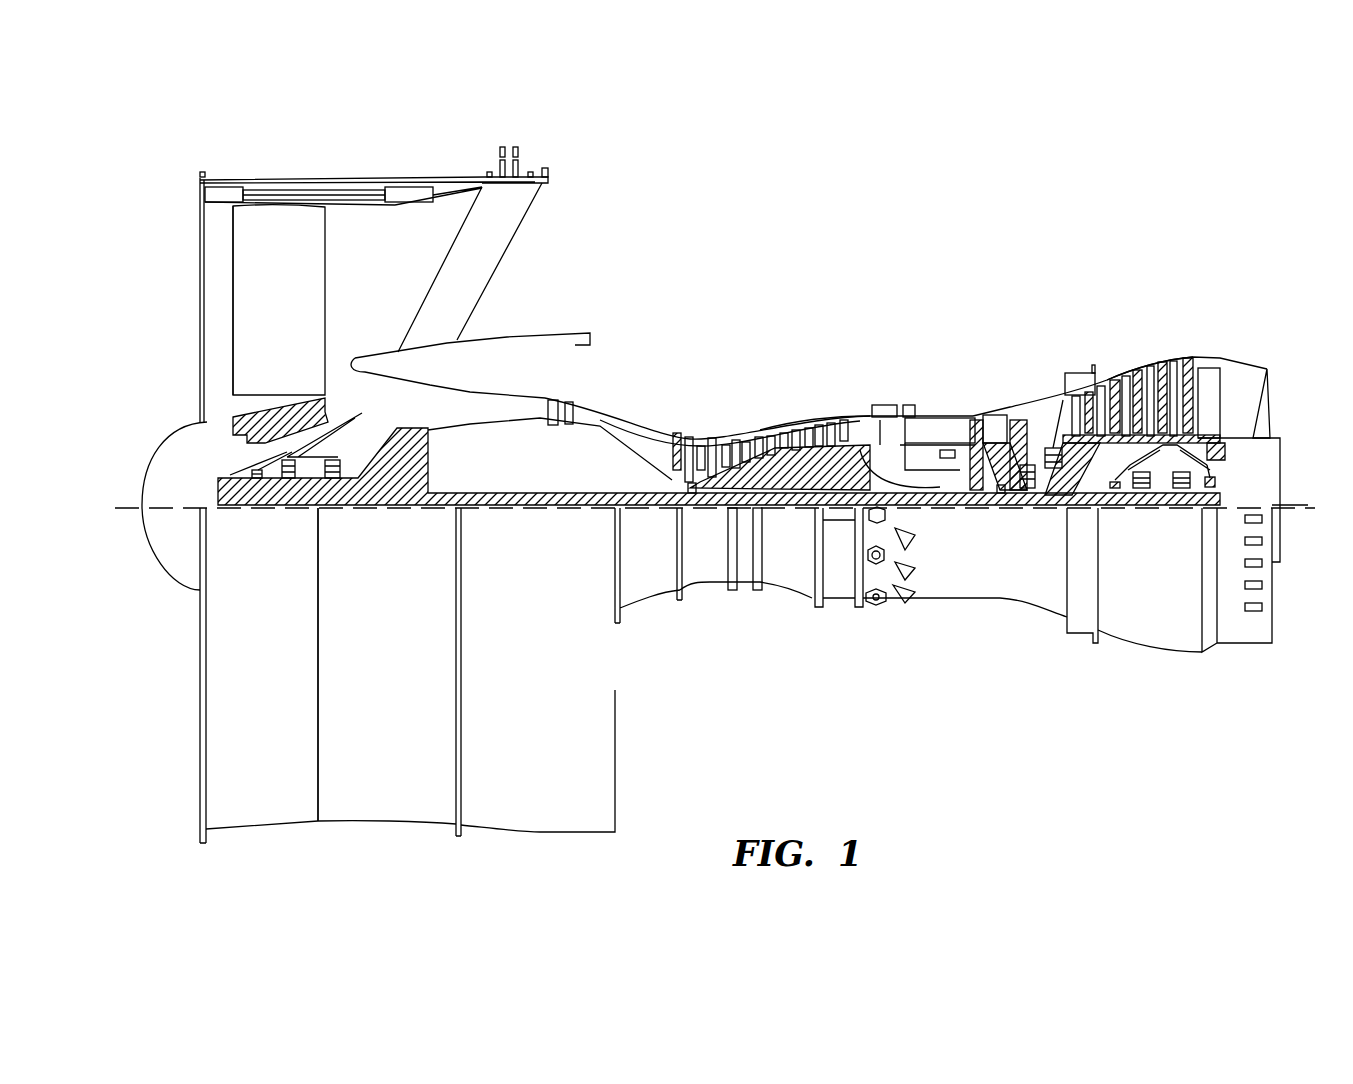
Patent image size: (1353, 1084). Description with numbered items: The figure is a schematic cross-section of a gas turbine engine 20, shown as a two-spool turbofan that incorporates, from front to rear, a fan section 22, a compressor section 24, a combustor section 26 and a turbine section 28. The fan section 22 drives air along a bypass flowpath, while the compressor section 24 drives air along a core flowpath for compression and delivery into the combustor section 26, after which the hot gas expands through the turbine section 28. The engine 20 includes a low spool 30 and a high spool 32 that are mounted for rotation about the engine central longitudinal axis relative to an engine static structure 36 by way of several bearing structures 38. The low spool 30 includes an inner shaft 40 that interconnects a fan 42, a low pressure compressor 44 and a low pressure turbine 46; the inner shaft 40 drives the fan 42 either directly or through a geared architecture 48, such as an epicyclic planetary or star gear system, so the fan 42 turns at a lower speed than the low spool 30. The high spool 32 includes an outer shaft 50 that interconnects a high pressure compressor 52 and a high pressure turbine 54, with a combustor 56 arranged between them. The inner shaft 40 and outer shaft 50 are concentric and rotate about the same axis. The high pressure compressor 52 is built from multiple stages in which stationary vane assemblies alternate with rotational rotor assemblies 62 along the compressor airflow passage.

The gas turbine engine 20 is at (1026, 232).
The fan section 22 is at (453, 155).
The compressor section 24 is at (463, 293).
The combustor section 26 is at (865, 293).
The turbine section 28 is at (1208, 293).
The low spool 30 is at (797, 508).
The high spool 32 is at (832, 430).
The engine static structure 36 is at (842, 604).
The bearing structures 38 is at (237, 571).
The inner shaft 40 is at (640, 508).
The fan 42 is at (287, 323).
The low pressure compressor 44 is at (535, 392).
The low pressure turbine 46 is at (1140, 367).
The geared architecture 48 is at (413, 482).
The outer shaft 50 is at (930, 490).
The high pressure compressor 52 is at (767, 462).
The high pressure turbine 54 is at (990, 412).
The combustor 56 is at (917, 443).
The rotational rotor assemblies 62 is at (703, 508).